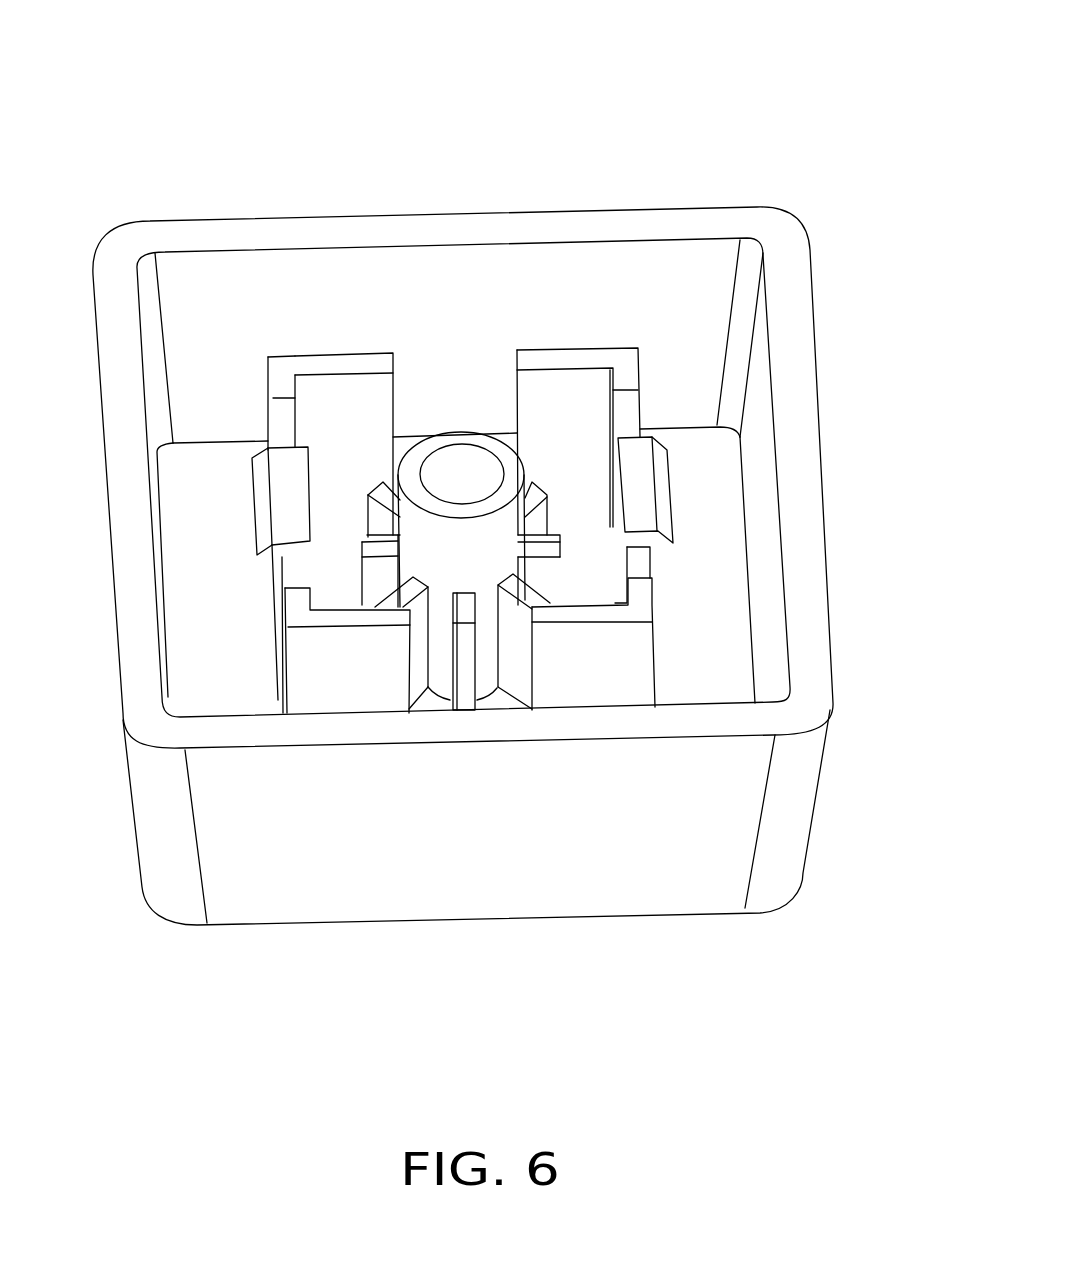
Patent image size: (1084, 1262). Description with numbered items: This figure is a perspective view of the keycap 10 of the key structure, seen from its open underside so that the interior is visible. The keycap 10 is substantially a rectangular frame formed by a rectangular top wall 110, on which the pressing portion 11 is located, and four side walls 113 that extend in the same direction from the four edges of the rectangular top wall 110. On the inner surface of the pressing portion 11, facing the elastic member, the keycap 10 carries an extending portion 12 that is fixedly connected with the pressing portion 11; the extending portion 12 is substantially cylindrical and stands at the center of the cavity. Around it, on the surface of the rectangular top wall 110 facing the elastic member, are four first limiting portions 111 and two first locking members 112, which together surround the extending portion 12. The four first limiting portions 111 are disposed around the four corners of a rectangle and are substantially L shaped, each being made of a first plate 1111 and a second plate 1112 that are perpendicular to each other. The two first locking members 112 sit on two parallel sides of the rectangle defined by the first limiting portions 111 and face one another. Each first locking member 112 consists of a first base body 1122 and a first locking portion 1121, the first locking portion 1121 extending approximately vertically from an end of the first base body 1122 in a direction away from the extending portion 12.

The keycap 10 is at (491, 32).
The pressing portion 11 is at (501, 548).
The rectangular top wall 110 is at (190, 472).
The first limiting portion 111 is at (368, 162).
The first plate 1111 is at (368, 365).
The second plate 1112 is at (285, 392).
The first locking member 112 is at (263, 503).
The first locking portion 1121 is at (662, 487).
The first base body 1122 is at (635, 557).
The side wall 113 is at (570, 891).
The extending portion 12 is at (453, 432).